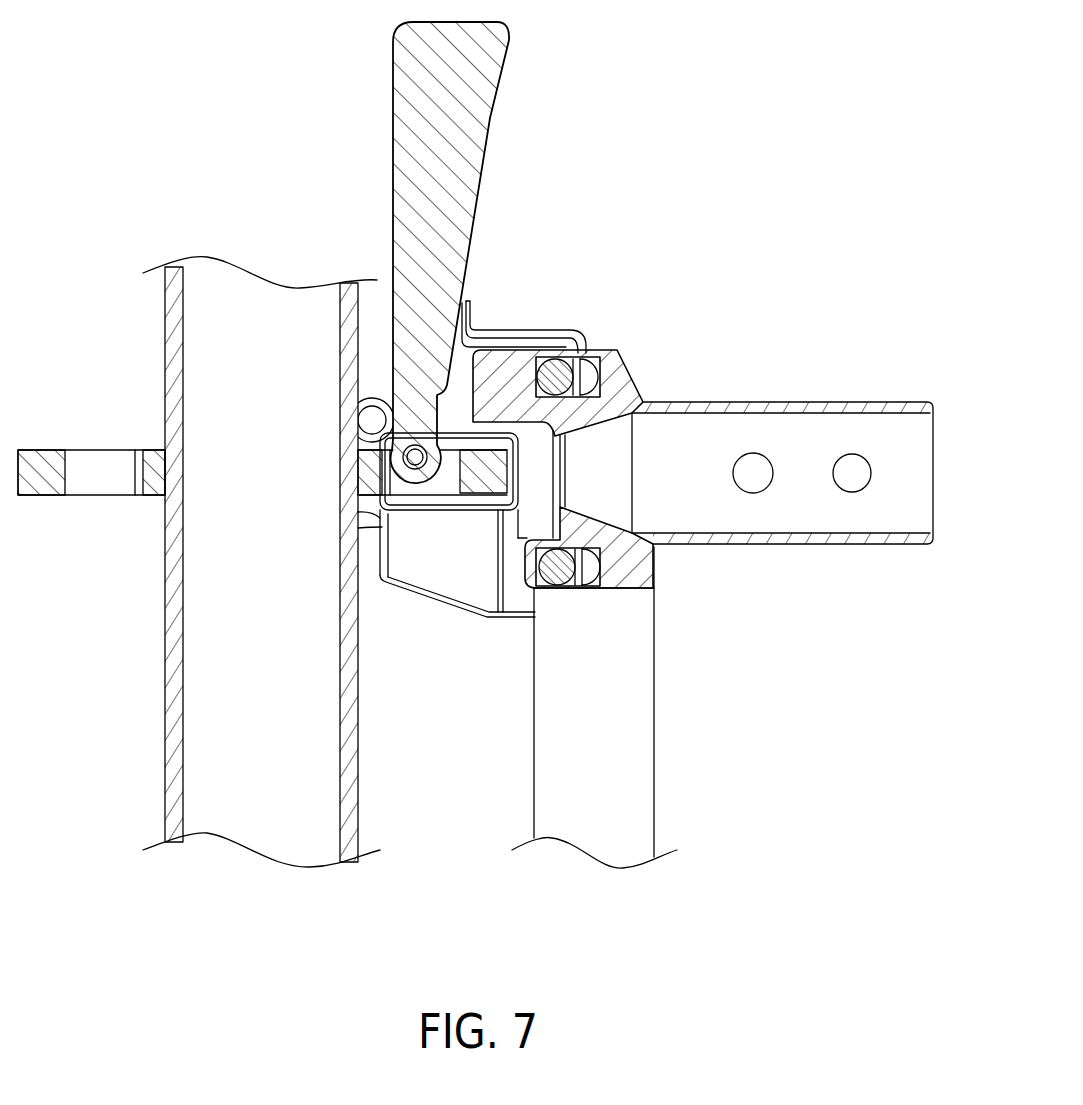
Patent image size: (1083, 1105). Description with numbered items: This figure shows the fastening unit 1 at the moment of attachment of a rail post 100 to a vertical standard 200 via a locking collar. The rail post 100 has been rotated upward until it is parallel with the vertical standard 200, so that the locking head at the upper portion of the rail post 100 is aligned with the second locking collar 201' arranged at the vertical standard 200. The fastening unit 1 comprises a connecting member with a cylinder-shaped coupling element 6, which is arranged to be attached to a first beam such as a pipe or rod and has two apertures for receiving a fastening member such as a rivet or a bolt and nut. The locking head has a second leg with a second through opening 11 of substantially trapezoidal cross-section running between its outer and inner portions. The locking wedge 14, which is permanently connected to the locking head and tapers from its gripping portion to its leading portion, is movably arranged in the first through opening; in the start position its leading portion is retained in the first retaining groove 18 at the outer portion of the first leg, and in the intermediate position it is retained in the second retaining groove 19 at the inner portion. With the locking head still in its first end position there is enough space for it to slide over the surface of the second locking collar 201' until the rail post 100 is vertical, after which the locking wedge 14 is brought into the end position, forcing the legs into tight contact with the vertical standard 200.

The fastening unit 1 is at (563, 311).
The coupling element 6 is at (903, 473).
The second through opening 11 is at (453, 560).
The locking wedge 14 is at (442, 242).
The first retaining groove 18 is at (468, 300).
The second retaining groove 19 is at (377, 403).
The rail post 100 is at (608, 740).
The vertical standard 200 is at (182, 334).
The second locking collar 201' is at (91, 530).